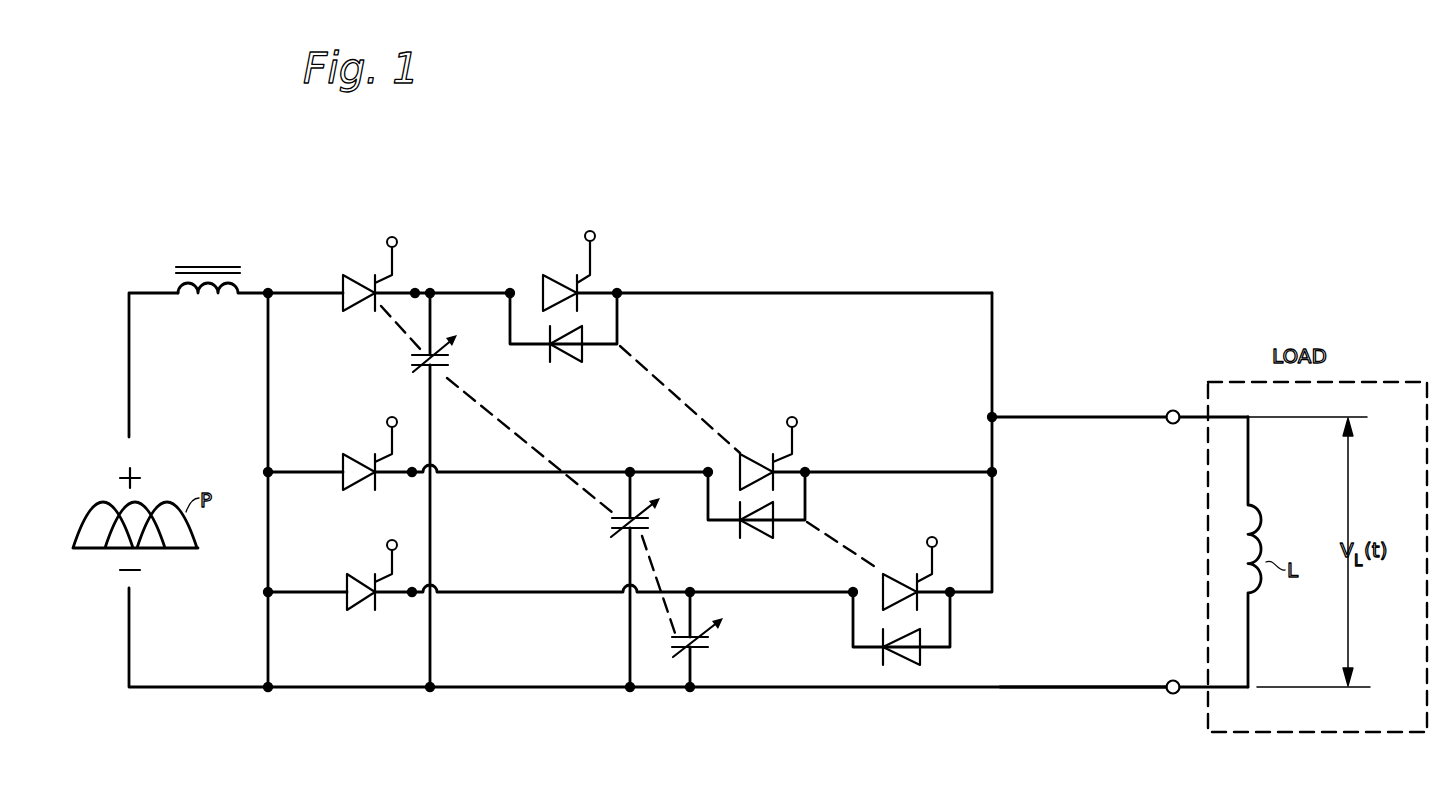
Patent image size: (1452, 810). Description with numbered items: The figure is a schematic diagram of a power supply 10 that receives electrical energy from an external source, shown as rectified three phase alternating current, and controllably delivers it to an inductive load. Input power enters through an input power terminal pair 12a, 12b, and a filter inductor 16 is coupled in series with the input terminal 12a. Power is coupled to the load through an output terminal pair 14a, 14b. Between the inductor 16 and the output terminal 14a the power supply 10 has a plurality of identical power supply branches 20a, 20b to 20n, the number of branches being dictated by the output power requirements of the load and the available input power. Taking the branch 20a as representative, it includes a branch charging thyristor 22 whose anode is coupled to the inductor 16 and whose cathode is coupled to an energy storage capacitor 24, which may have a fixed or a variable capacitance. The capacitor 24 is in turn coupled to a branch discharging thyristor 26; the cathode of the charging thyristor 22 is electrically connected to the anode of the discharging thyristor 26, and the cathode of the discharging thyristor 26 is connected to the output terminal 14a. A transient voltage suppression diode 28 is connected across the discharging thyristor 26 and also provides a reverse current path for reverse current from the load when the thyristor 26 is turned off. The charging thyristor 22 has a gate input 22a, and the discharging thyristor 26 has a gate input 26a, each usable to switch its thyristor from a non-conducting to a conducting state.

The power supply 10 is at (708, 234).
The input power terminal 12a is at (129, 355).
The input power terminal 12b is at (129, 648).
The output terminal 14a is at (1128, 378).
The output terminal 14b is at (1048, 686).
The filter inductor 16 is at (208, 298).
The power supply branch 20a is at (669, 599).
The power supply branch 20b is at (641, 465).
The power supply branch 20n is at (780, 294).
The branch charging thyristor 22 is at (355, 606).
The gate input 22a is at (398, 546).
The energy storage capacitor 24 is at (708, 640).
The branch discharging thyristor 26 is at (898, 580).
The gate input 26a is at (934, 552).
The transient voltage suppression diode 28 is at (922, 652).